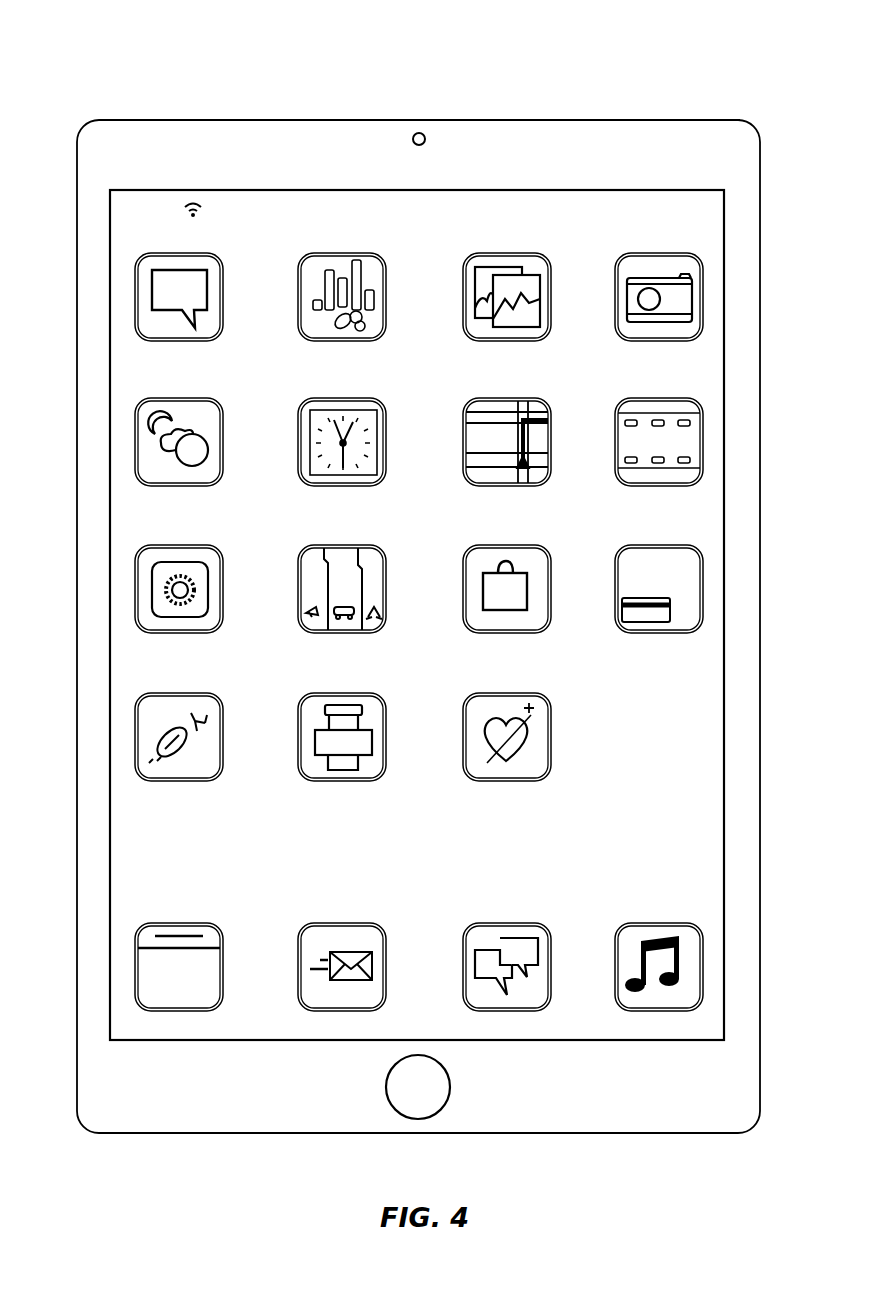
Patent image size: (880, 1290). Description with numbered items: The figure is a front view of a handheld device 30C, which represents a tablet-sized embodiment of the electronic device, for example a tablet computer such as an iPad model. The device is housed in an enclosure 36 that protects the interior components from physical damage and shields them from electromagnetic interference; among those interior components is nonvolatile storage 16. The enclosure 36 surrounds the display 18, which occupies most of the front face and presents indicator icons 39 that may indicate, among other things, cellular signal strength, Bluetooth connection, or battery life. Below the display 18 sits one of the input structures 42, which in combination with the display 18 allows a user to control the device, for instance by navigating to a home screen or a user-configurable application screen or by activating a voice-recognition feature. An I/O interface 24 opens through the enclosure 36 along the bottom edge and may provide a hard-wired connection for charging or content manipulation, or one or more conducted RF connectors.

The handheld device 30C is at (88, 72).
The nonvolatile storage 16 is at (136, 120).
The enclosure 36 is at (677, 121).
The display 18 is at (724, 697).
The indicator icons 39 is at (427, 264).
The input structures 42 is at (450, 1088).
The I/O interface 24 is at (419, 1134).